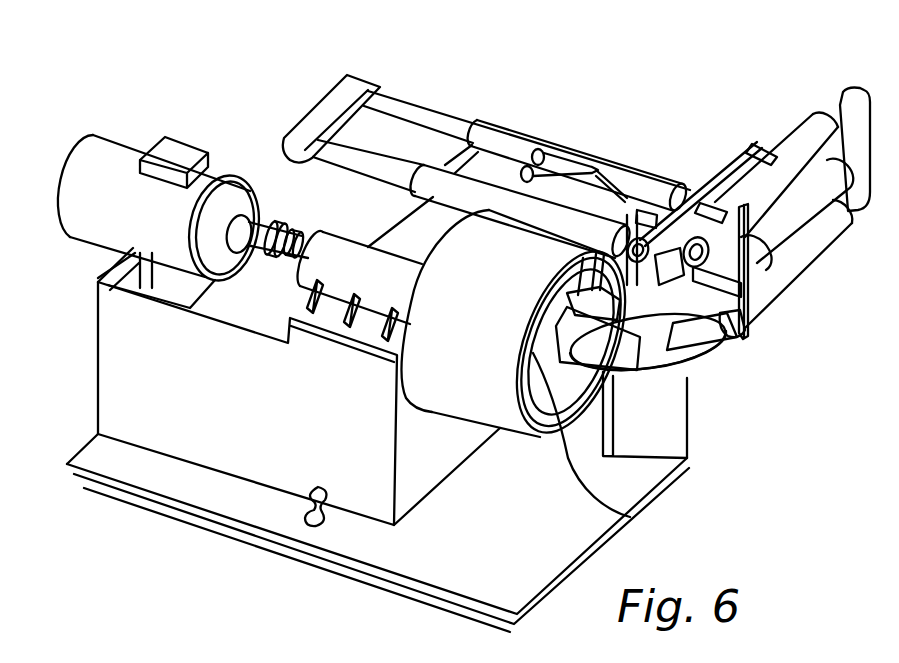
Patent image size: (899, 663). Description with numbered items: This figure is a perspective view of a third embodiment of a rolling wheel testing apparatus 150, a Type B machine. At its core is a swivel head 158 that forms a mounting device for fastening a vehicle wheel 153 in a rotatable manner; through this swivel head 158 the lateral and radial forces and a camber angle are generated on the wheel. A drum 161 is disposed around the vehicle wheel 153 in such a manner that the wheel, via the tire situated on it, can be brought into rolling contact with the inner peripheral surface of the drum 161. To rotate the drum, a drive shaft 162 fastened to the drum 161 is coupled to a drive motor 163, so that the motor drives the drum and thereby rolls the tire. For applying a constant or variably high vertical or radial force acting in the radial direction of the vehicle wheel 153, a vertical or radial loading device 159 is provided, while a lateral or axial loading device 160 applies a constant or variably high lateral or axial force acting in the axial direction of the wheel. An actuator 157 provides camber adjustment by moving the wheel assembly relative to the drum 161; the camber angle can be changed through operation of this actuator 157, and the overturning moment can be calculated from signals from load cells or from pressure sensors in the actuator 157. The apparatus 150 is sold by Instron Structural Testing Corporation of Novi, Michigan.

The apparatus 150 is at (641, 95).
The vehicle wheel 153 is at (630, 517).
The actuator 157 is at (713, 333).
The swivel head 158 is at (713, 376).
The vertical or radial loading device 159 is at (781, 98).
The lateral or axial loading device 160 is at (475, 86).
The drum 161 is at (460, 260).
The drive shaft 162 is at (293, 248).
The drive motor 163 is at (92, 140).